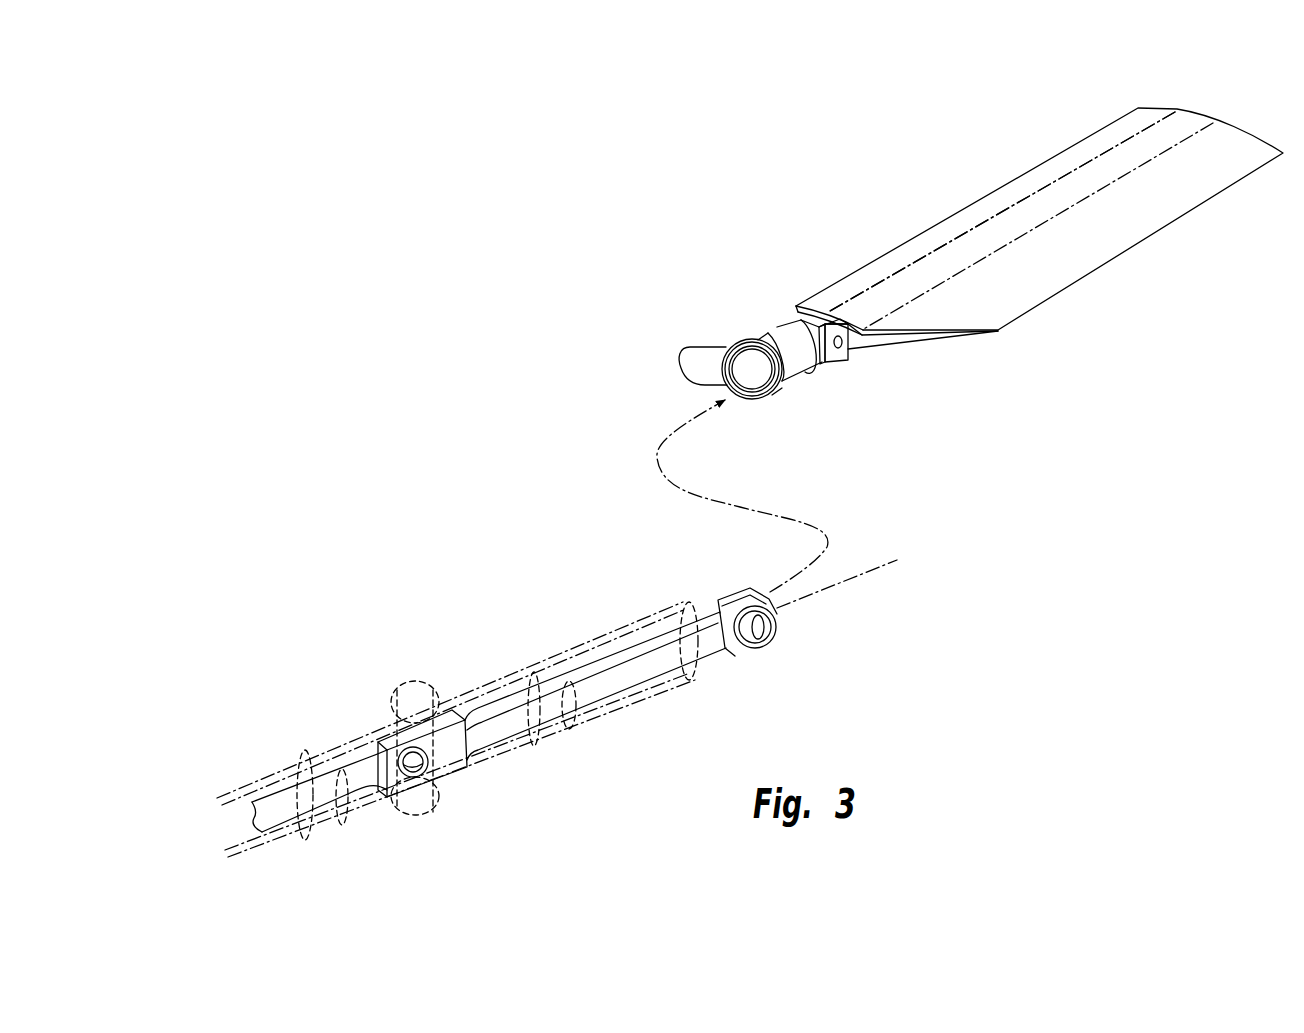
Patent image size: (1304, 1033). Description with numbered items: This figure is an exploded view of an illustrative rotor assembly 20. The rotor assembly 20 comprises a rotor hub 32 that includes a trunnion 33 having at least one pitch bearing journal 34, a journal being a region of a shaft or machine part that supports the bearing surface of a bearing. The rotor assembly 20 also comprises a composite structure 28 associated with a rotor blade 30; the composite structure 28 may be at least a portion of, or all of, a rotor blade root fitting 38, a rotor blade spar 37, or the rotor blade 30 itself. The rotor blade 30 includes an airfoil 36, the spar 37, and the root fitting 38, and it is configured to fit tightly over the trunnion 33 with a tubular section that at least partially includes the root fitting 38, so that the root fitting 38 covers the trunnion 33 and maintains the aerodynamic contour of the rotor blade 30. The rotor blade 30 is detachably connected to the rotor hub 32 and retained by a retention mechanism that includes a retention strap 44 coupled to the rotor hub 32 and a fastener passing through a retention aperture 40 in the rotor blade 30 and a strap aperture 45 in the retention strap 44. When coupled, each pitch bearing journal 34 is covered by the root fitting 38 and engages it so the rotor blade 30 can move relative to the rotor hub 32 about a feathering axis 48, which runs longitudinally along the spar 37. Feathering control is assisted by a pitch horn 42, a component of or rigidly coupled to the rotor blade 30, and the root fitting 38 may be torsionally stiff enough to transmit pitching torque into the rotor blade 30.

The rotor assembly 20 is at (366, 240).
The composite structure 28 is at (934, 152).
The rotor blade 30 is at (916, 184).
The rotor hub 32 is at (392, 742).
The trunnion 33 is at (347, 743).
The pitch bearing journal 34 is at (318, 827).
The airfoil 36 is at (1107, 238).
The spar 37 is at (1003, 247).
The root fitting 38 is at (772, 332).
The retention aperture 40 is at (855, 347).
The pitch horn 42 is at (680, 345).
The retention strap 44 is at (592, 640).
The strap aperture 45 is at (776, 626).
The feathering axis 48 is at (867, 573).